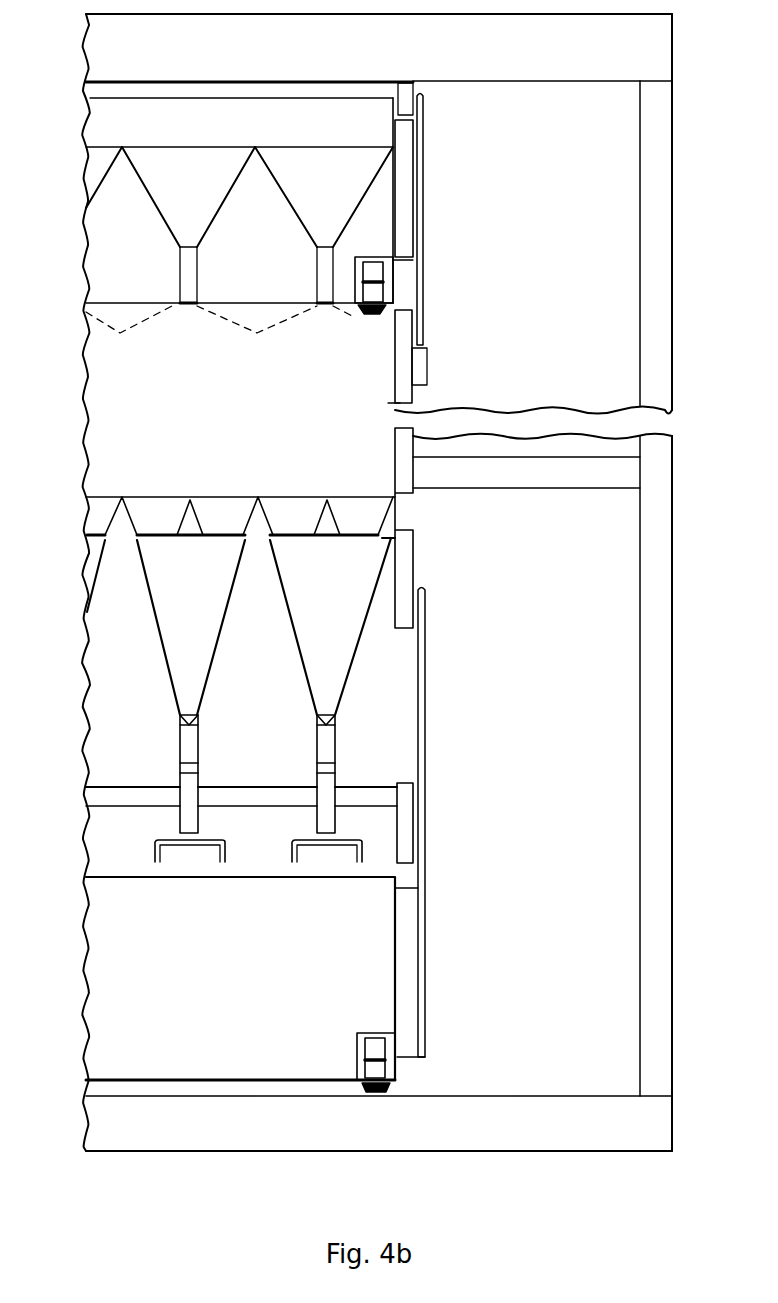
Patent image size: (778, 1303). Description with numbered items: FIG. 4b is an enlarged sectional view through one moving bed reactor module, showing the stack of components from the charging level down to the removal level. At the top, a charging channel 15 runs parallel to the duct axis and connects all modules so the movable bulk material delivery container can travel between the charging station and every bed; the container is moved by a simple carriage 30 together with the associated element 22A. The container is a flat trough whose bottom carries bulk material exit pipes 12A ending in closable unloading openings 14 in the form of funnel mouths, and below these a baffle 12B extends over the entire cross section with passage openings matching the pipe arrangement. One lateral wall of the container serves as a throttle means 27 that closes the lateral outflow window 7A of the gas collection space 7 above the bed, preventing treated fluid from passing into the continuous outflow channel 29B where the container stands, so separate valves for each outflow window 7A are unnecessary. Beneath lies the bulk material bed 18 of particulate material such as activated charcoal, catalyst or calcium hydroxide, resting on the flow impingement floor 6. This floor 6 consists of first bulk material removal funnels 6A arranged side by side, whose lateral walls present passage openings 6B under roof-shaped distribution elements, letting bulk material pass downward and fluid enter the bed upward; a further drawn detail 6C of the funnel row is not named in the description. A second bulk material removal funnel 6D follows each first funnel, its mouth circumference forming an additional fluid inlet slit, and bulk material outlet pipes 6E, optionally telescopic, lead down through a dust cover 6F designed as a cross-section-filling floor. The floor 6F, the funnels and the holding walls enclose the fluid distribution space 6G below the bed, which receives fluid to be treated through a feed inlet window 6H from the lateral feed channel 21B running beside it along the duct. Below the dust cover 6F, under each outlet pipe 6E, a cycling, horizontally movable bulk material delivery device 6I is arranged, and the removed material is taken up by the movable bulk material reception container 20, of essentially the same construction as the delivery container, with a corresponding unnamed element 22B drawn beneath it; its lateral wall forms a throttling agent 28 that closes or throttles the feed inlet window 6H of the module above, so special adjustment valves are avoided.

The charging channel 15 is at (130, 93).
The gas collection space 7 is at (278, 231).
The lateral outflow window 7A is at (420, 240).
The throttle means 27 is at (421, 180).
The bulk material exit pipes 12A is at (180, 267).
The baffle 12B is at (263, 302).
The closable unloading openings 14 is at (187, 308).
The bulk material bed 18 is at (260, 411).
The outflow channel 29B is at (592, 300).
The carriage 30 is at (375, 272).
The guide element 22A is at (372, 316).
The flow impingement floor 6 is at (78, 600).
The first bulk material removal funnels 6A is at (250, 487).
The passage openings 6B is at (190, 522).
The inlet chamber 6C is at (288, 510).
The second bulk material removal funnel 6D is at (212, 668).
The bulk material outlet pipes 6E is at (200, 750).
The dust cover 6F is at (147, 787).
The fluid distribution space 6G is at (143, 651).
The feed inlet window 6H is at (400, 628).
The bulk material delivery device 6I is at (366, 855).
The throttling agent 28 is at (422, 725).
The bulk material reception container 20 is at (128, 877).
The lateral feed channel 21B is at (582, 992).
The lower support 22B is at (373, 1093).